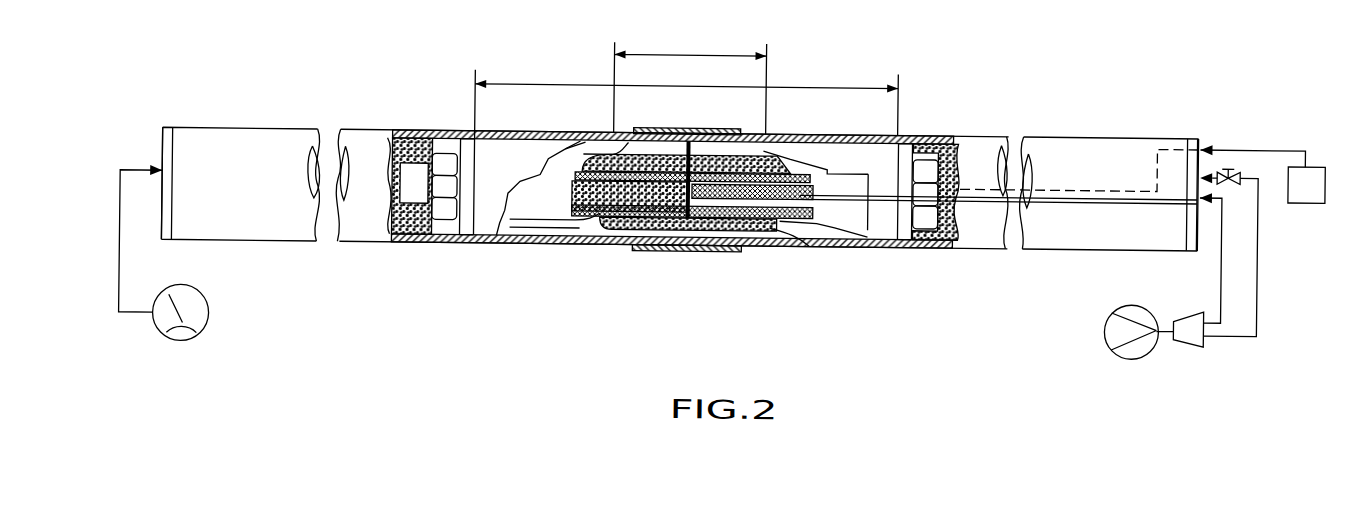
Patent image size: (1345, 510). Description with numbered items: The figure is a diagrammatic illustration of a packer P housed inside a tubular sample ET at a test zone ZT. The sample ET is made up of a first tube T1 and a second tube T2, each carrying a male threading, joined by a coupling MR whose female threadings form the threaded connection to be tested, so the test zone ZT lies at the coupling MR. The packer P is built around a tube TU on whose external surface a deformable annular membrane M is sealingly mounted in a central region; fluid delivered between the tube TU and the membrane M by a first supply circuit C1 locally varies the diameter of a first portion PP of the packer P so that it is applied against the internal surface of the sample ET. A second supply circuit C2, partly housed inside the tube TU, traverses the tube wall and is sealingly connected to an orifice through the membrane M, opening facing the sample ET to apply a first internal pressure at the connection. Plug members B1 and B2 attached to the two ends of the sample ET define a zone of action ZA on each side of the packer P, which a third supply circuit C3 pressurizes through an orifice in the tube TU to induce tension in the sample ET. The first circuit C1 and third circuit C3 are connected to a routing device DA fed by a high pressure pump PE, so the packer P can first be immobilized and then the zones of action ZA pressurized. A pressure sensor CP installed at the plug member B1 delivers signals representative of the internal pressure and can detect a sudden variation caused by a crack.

The tubular sample ET is at (211, 118).
The first tube T1 is at (257, 133).
The plug member B1 is at (162, 153).
The pressure sensor CP is at (213, 328).
The zone of action ZA is at (412, 145).
The packer P is at (466, 140).
The deformable annular membrane M is at (583, 164).
The first portion of the packer PP is at (696, 55).
The test zone ZT is at (800, 86).
The second fluid supply circuit C2 is at (707, 134).
The tube of the packer TU is at (533, 205).
The third fluid supply circuit C3 is at (603, 201).
The coupling MR is at (662, 251).
The first fluid supply circuit C1 is at (733, 207).
The second tube T2 is at (1107, 133).
The plug member B2 is at (1200, 141).
The high pressure pump PE is at (1127, 355).
The routing device DA is at (1200, 341).